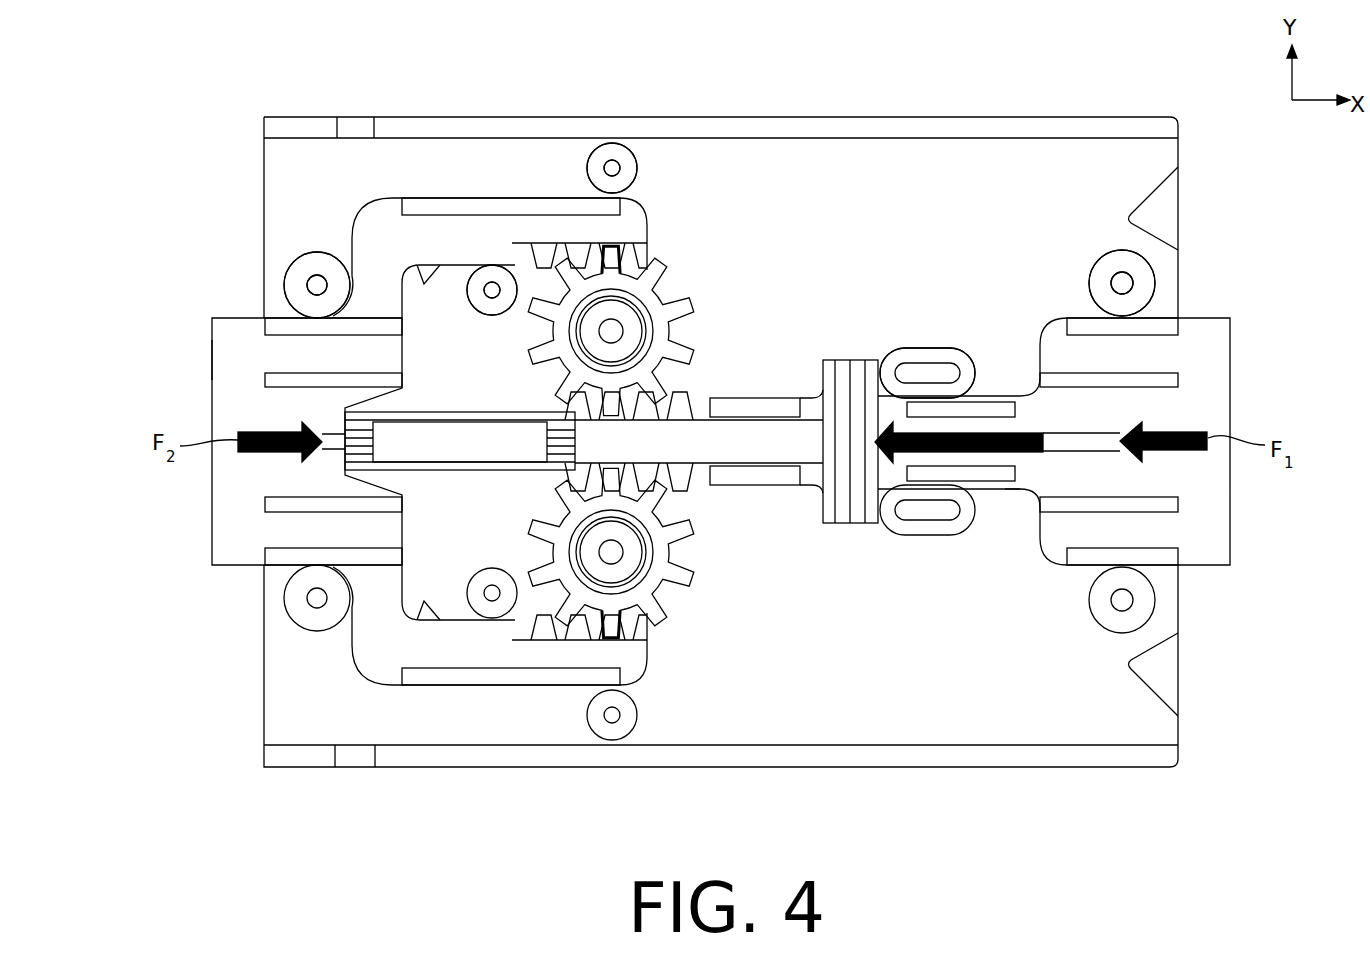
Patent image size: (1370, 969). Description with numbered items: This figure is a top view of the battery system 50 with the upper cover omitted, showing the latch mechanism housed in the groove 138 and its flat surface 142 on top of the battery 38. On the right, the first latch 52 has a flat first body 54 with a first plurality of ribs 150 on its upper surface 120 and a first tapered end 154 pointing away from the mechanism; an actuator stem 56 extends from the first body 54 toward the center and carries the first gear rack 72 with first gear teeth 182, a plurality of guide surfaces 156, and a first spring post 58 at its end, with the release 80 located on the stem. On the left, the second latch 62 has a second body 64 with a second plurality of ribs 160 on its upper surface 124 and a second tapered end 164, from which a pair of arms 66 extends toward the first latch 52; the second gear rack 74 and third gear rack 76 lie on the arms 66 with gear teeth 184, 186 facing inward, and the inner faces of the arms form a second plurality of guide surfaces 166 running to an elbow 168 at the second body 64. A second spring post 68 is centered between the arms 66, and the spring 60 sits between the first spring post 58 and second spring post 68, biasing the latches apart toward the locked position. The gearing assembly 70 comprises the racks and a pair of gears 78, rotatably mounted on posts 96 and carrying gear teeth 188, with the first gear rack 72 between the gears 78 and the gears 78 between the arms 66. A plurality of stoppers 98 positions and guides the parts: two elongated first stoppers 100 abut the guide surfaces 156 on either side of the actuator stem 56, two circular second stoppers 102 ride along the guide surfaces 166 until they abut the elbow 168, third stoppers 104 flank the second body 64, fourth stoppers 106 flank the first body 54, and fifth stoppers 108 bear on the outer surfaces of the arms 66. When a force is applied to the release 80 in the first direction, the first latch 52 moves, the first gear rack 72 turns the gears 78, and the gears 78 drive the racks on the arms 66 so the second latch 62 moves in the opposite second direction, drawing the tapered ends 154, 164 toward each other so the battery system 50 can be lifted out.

The battery 38 is at (1097, 778).
The battery system 50 is at (1145, 82).
The first latch 52 is at (1220, 585).
The first body 54 is at (1050, 318).
The actuator stem 56 is at (1020, 495).
The first spring post 58 is at (557, 440).
The spring 60 is at (432, 412).
The second latch 62 is at (222, 580).
The second body 64 is at (245, 342).
The pair of arms 66 is at (486, 204).
The second spring post 68 is at (368, 442).
The gearing assembly 70 is at (742, 343).
The first gear rack 72 is at (700, 392).
The second gear rack 74 is at (652, 246).
The third gear rack 76 is at (680, 626).
The pair of gears 78 is at (659, 293).
The release 80 is at (840, 358).
The posts 96 is at (616, 328).
The plurality of stoppers 98 is at (719, 270).
The first stopper 100 is at (922, 348).
The second stopper 102 is at (492, 315).
The third stopper 104 is at (300, 262).
The fourth stopper 106 is at (1150, 262).
The fifth stopper 108 is at (625, 147).
The upper surface 120 is at (1172, 478).
The upper surface 124 is at (272, 478).
The groove 138 is at (920, 712).
The flat surface 142 is at (857, 721).
The first plurality of ribs 150 is at (1180, 380).
The first tapered end 154 is at (1230, 343).
The plurality of guide surfaces 156 is at (1040, 352).
The second plurality of ribs 160 is at (265, 380).
The second tapered end 164 is at (212, 355).
The second plurality of guide surfaces 166 is at (445, 262).
The elbow 168 is at (420, 275).
The first gear teeth 182 is at (690, 485).
The gear teeth 184 is at (662, 264).
The gear teeth 186 is at (649, 633).
The gear teeth 188 is at (688, 523).